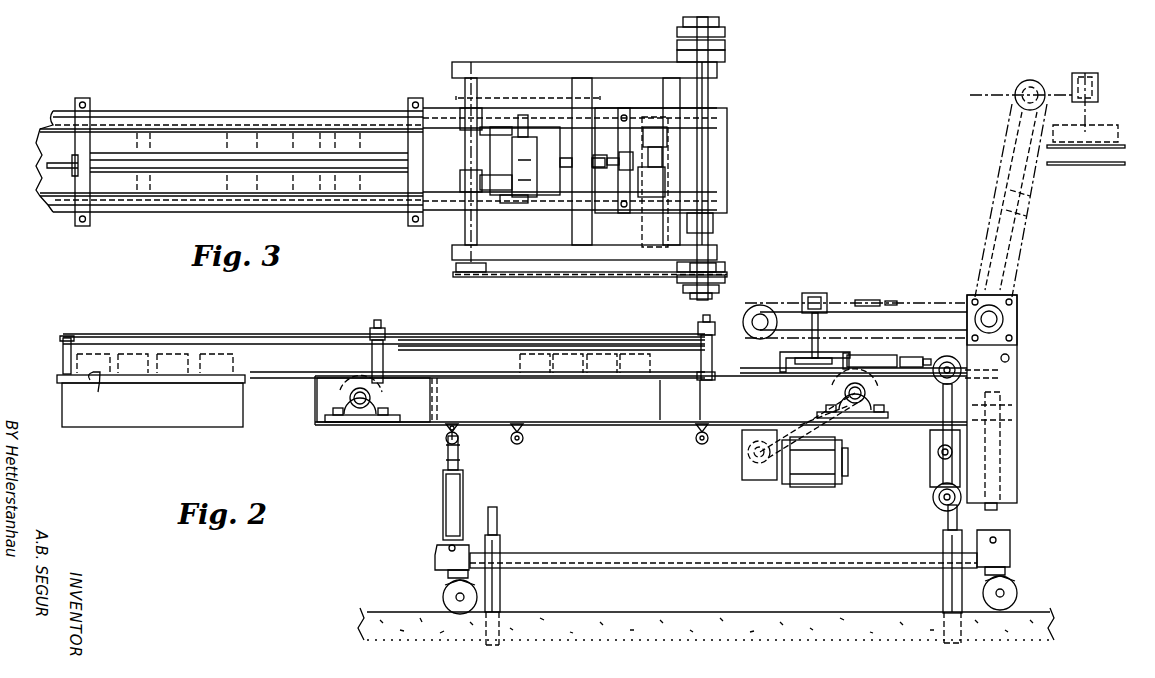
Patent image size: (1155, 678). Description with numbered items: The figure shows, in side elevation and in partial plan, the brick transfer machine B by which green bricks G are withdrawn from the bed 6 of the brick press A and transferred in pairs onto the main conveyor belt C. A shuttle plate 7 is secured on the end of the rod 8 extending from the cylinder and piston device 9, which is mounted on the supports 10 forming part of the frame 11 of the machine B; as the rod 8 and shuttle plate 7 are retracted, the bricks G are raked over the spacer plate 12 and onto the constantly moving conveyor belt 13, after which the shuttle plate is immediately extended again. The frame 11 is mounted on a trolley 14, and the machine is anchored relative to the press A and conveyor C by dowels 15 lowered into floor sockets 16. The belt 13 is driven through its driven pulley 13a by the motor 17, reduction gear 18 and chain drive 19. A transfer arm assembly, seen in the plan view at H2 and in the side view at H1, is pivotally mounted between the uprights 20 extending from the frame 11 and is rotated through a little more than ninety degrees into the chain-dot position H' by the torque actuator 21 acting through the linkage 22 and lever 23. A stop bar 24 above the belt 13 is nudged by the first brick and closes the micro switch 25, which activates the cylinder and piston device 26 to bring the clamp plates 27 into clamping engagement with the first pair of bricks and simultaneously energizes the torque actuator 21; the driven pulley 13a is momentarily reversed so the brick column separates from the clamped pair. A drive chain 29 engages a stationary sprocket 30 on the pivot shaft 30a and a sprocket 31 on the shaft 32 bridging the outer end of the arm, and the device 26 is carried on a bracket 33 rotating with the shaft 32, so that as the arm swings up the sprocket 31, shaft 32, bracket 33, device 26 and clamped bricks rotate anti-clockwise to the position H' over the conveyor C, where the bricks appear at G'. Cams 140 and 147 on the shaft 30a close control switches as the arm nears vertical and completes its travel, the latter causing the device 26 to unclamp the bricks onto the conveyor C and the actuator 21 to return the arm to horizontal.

In FIG. 2, the bed 6 is at (99, 389).
In FIG. 2, the shuttle plate 7 is at (62, 360).
In FIG. 3, the rod 8 is at (58, 169).
In FIG. 2, the rod 8 is at (288, 343).
In FIG. 3, the cylinder and piston device 9 is at (205, 160).
In FIG. 2, the cylinder and piston device 9 is at (425, 340).
In FIG. 3, the supports 10 is at (86, 212).
In FIG. 2, the supports 10 is at (371, 362).
In FIG. 3, the frame 11 is at (139, 212).
In FIG. 2, the frame 11 is at (416, 424).
In FIG. 2, the spacer plate 12 is at (282, 378).
In FIG. 3, the conveyor belt 13 is at (175, 130).
In FIG. 2, the driven pulley 13a is at (888, 394).
In FIG. 2, the trolley 14 is at (603, 553).
In FIG. 2, the dowels 15 is at (500, 518).
In FIG. 2, the floor sockets 16 is at (502, 620).
In FIG. 2, the motor 17 is at (812, 486).
In FIG. 2, the reduction gear 18 is at (755, 480).
In FIG. 3, the chain drive 19 is at (540, 95).
In FIG. 2, the chain drive 19 is at (845, 432).
In FIG. 3, the uprights 20 is at (718, 64).
In FIG. 2, the uprights 20 is at (1005, 362).
In FIG. 3, the torque actuator 21 is at (658, 183).
In FIG. 2, the torque actuator 21 is at (930, 482).
In FIG. 2, the linkage 22 is at (930, 440).
In FIG. 3, the lever 23 is at (712, 228).
In FIG. 2, the lever 23 is at (962, 366).
In FIG. 3, the stop bar 24 is at (553, 200).
In FIG. 2, the stop bar 24 is at (860, 356).
In FIG. 3, the micro switch 25 is at (626, 168).
In FIG. 2, the micro switch 25 is at (915, 357).
In FIG. 3, the cylinder and piston device 26 is at (528, 158).
In FIG. 2, the cylinder and piston device 26 is at (818, 297).
In FIG. 3, the clamp plates 27 is at (500, 128).
In FIG. 2, the clamp plates 27 is at (785, 362).
In FIG. 2, the drive chain 29 is at (855, 300).
In FIG. 3, the stationary sprocket 30 is at (720, 262).
In FIG. 3, the pivot shaft 30a is at (710, 98).
In FIG. 2, the pivot shaft 30a is at (1003, 319).
In FIG. 3, the sprocket 31 is at (455, 270).
In FIG. 2, the sprocket 31 is at (757, 340).
In FIG. 3, the shaft 32 is at (466, 222).
In FIG. 3, the bracket 33 is at (492, 192).
In FIG. 2, the bracket 33 is at (798, 303).
In FIG. 3, the cam 140 is at (725, 50).
In FIG. 3, the cam 147 is at (722, 38).
In FIG. 2, the brick press A is at (144, 442).
In FIG. 2, the brick transfer machine B is at (416, 518).
In FIG. 2, the conveyor belt C is at (1076, 150).
In FIG. 3, the green bricks G is at (248, 140).
In FIG. 2, the green bricks G is at (363, 342).
In FIG. 2, the article holder G' is at (1090, 107).
In FIG. 2, the arm H1 is at (934, 291).
In FIG. 3, the frame H2 is at (620, 61).
In FIG. 2, the transfer arm assembly raised position H' is at (1021, 172).